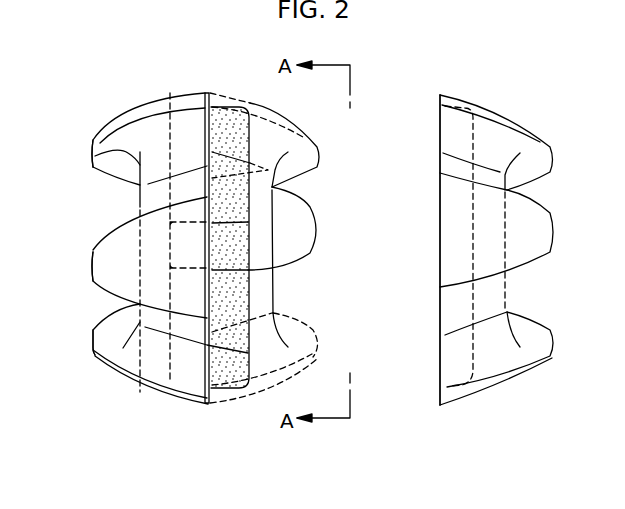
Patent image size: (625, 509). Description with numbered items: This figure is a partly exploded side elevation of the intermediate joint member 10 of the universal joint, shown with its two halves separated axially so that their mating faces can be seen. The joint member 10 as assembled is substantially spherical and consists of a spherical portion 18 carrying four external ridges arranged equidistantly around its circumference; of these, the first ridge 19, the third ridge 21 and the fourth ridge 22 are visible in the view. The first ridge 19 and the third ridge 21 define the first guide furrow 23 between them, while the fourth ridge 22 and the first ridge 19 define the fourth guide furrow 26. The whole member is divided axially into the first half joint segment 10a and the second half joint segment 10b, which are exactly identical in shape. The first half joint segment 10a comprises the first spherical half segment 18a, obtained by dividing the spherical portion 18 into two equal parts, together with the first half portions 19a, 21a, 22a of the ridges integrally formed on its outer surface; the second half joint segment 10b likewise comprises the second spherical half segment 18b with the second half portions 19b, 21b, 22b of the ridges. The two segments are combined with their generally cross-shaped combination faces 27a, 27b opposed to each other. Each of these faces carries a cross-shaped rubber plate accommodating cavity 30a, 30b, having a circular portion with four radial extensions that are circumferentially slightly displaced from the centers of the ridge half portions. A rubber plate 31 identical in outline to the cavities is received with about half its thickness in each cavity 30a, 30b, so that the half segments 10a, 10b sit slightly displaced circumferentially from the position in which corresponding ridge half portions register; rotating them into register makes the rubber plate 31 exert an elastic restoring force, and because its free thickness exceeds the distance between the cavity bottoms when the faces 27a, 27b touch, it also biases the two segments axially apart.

The intermediate joint member 10 is at (140, 394).
The first half joint segment 10a is at (168, 398).
The second half joint segment 10b is at (318, 335).
The spherical portion 18 is at (147, 195).
The first spherical half segment 18a is at (172, 345).
The second spherical half segment 18b is at (495, 297).
The first ridge 19 is at (93, 243).
The first half portion of first ridge 19a is at (93, 268).
The second half portion of first ridge 19b is at (553, 228).
The third ridge 21 is at (160, 102).
The first half portion of third ridge 21a is at (108, 131).
The second half portion of third ridge 21b is at (534, 131).
The fourth ridge 22 is at (196, 402).
The first half portion of fourth ridge 22a is at (93, 343).
The second half portion of fourth ridge 22b is at (538, 367).
The first guide furrow 23 is at (95, 156).
The fourth guide furrow 26 is at (147, 320).
The combination face of first half segment 27a is at (210, 403).
The combination face of second half segment 27b is at (440, 250).
The rubber plate accommodating cavity 30a is at (172, 147).
The rubber plate accommodating cavity 30b is at (473, 205).
The rubber plate 31 is at (237, 298).